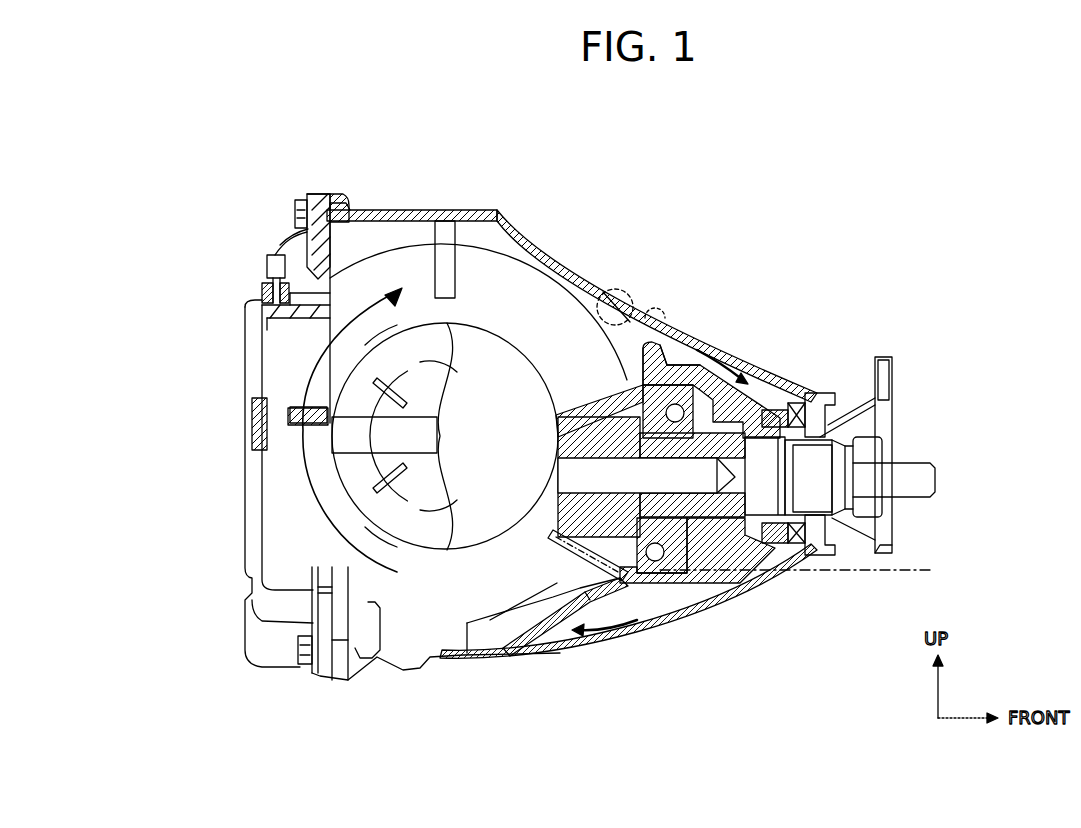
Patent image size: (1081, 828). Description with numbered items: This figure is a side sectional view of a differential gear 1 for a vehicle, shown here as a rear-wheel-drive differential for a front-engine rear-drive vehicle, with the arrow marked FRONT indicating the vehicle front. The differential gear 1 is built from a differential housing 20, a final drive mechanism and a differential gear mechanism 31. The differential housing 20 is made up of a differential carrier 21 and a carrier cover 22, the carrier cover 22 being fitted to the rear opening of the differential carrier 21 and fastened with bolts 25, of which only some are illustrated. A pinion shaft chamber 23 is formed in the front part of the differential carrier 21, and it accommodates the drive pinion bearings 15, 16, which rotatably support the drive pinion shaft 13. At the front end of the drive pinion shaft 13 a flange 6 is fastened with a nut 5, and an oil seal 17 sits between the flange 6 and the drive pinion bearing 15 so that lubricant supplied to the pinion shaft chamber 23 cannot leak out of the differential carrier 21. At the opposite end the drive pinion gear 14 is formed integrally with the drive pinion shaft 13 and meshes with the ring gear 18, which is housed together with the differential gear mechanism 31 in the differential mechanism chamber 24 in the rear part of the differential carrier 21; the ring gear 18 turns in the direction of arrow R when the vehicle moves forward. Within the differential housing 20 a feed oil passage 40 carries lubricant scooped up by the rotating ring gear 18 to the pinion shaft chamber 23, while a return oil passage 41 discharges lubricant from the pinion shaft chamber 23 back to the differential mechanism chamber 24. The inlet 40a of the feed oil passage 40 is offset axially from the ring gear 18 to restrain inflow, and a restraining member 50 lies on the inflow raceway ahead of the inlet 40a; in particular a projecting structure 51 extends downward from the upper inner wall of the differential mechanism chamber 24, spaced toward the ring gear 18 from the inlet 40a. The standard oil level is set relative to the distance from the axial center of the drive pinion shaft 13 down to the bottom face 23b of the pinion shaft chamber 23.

The differential gear 1 is at (784, 630).
The nut 5 is at (872, 458).
The flange 6 is at (882, 410).
The drive pinion shaft 13 is at (815, 505).
The drive pinion gear 14 is at (560, 550).
The drive pinion bearing 15 is at (773, 407).
The drive pinion bearing 16 is at (667, 362).
The oil seal 17 is at (800, 410).
The ring gear 18 is at (445, 592).
The differential housing 20 is at (360, 136).
The differential carrier 21 is at (338, 194).
The carrier cover 22 is at (318, 196).
The pinion shaft chamber 23 is at (740, 403).
The bottom face of the pinion shaft chamber 23b is at (819, 568).
The differential mechanism chamber 24 is at (407, 238).
The bolt 25 is at (294, 214).
The differential gear mechanism 31 is at (425, 485).
The feed oil passage 40 is at (668, 345).
The inlet of the feed oil passage 40a is at (670, 340).
The return oil passage 41 is at (660, 618).
The restraining member 50 is at (450, 282).
The projecting structure 51 is at (611, 288).